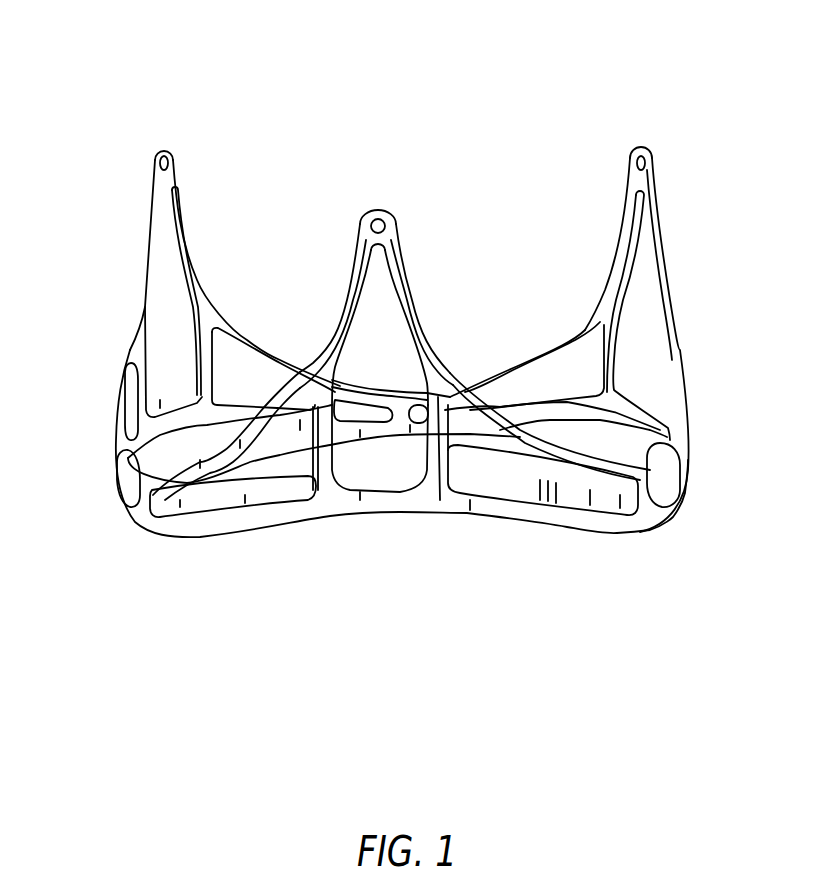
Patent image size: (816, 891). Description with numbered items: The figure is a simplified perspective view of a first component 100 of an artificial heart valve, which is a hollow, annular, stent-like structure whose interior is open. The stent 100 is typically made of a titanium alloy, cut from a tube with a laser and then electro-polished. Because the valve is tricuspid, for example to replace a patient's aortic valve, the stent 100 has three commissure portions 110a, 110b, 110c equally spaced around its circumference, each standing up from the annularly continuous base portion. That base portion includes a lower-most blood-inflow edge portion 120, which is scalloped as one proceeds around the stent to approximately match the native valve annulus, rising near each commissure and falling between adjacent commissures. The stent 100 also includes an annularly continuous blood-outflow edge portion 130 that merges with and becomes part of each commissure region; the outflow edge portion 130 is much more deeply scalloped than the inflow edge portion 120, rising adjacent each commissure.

The first component 100 is at (218, 50).
The commissure portion 110a is at (157, 158).
The commissure portion 110b is at (391, 221).
The commissure portion 110c is at (648, 163).
The blood-inflow edge portion 120 is at (222, 520).
The blood-outflow edge portion 130 is at (491, 413).